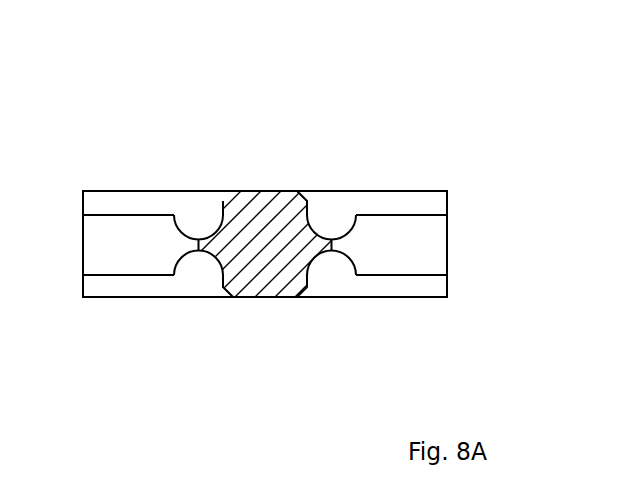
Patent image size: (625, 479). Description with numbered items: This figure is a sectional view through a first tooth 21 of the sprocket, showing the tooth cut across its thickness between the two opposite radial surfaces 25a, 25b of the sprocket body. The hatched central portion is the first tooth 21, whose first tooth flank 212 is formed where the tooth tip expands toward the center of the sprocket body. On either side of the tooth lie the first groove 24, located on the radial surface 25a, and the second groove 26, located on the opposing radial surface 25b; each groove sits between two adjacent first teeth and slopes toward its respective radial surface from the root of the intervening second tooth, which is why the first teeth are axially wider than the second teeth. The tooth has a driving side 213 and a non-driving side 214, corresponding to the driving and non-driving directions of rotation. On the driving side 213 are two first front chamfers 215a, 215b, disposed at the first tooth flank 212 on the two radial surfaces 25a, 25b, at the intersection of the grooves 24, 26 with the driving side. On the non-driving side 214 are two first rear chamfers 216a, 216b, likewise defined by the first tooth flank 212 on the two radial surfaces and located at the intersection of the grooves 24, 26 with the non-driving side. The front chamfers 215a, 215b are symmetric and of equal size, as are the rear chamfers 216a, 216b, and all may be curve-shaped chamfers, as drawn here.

The first tooth 21 is at (267, 203).
The first tooth flank 212 is at (288, 191).
The driving side 213 is at (336, 250).
The non-driving side 214 is at (196, 247).
The first front chamfer 215a is at (324, 253).
The first front chamfer 215b is at (312, 228).
The first rear chamfer 216a is at (218, 263).
The first rear chamfer 216b is at (218, 227).
The first groove 24 is at (401, 286).
The second groove 26 is at (400, 198).
The radial surface 25a is at (129, 293).
The radial surface 25b is at (140, 191).